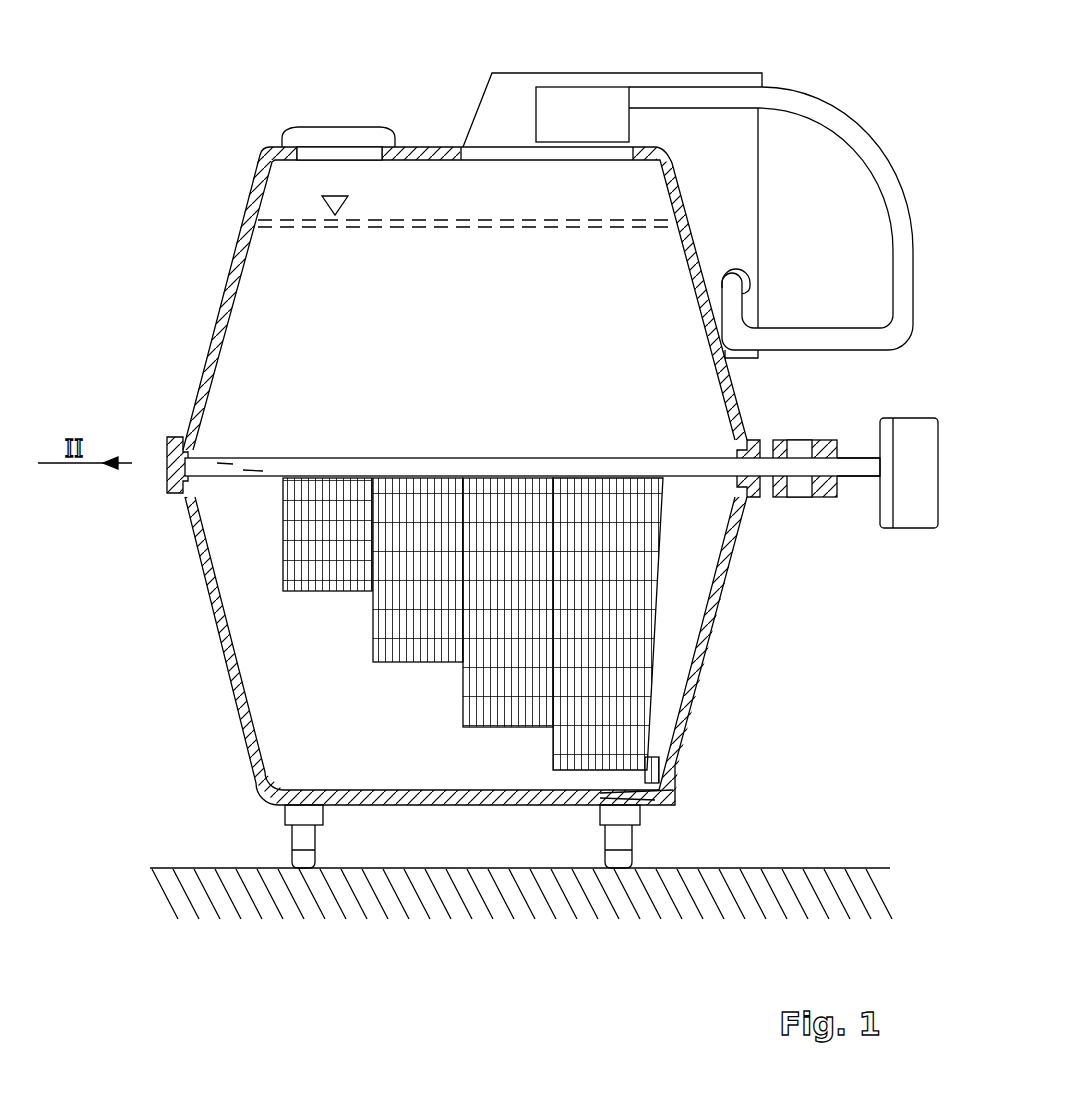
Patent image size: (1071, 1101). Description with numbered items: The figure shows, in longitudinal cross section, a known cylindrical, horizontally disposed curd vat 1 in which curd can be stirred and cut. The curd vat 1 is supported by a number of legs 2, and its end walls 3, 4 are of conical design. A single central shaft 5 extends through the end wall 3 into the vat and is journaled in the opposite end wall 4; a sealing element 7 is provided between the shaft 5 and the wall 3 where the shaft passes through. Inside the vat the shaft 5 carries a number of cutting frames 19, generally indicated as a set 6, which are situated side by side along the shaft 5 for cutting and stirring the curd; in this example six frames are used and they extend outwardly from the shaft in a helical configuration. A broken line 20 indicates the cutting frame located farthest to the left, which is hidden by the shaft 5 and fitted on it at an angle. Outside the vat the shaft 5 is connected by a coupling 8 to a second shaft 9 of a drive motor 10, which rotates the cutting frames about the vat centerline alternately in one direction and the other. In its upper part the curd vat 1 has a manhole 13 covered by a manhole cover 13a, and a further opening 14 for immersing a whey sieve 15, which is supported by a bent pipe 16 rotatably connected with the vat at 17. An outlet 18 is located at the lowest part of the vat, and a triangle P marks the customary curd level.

The curd vat 1 is at (258, 98).
The legs 2 is at (307, 835).
The end wall 3 is at (735, 400).
The end wall 4 is at (212, 357).
The shaft 5 is at (333, 465).
The set of cutting frames 6 is at (318, 625).
The sealing element 7 is at (762, 447).
The coupling 8 is at (830, 438).
The second shaft 9 is at (863, 470).
The drive motor 10 is at (917, 528).
The manhole 13 is at (313, 157).
The manhole cover 13a is at (342, 140).
The opening 14 is at (492, 157).
The whey sieve 15 is at (583, 110).
The bent pipe 16 is at (810, 110).
The rotatable connection 17 is at (750, 262).
The outlet 18 is at (658, 800).
The cutting frames 19 is at (545, 758).
The broken line 20 is at (236, 472).
The triangle P is at (347, 204).